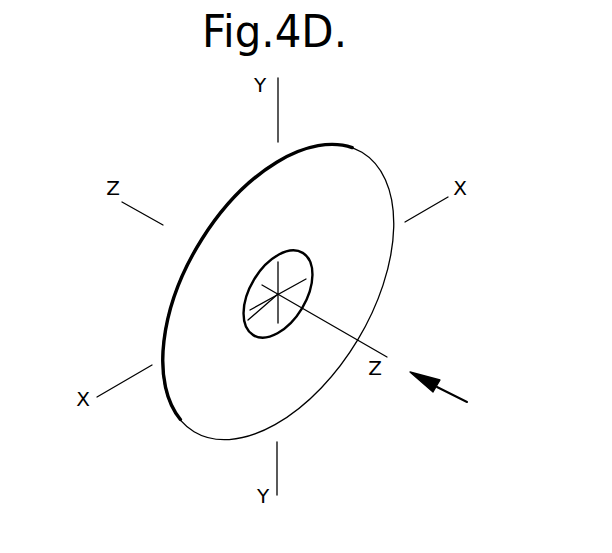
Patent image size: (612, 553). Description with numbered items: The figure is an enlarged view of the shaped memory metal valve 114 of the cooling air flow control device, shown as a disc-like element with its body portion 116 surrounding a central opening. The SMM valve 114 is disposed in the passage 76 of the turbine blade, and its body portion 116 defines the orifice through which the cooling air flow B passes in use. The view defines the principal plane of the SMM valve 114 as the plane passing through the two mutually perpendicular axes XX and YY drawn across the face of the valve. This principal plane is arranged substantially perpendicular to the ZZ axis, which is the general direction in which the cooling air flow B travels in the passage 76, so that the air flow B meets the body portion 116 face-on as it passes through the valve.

The shaped memory metal valve 114 is at (366, 134).
The body portion 116 is at (372, 290).
The passage 76 is at (302, 260).
The cooling air flow B is at (465, 400).